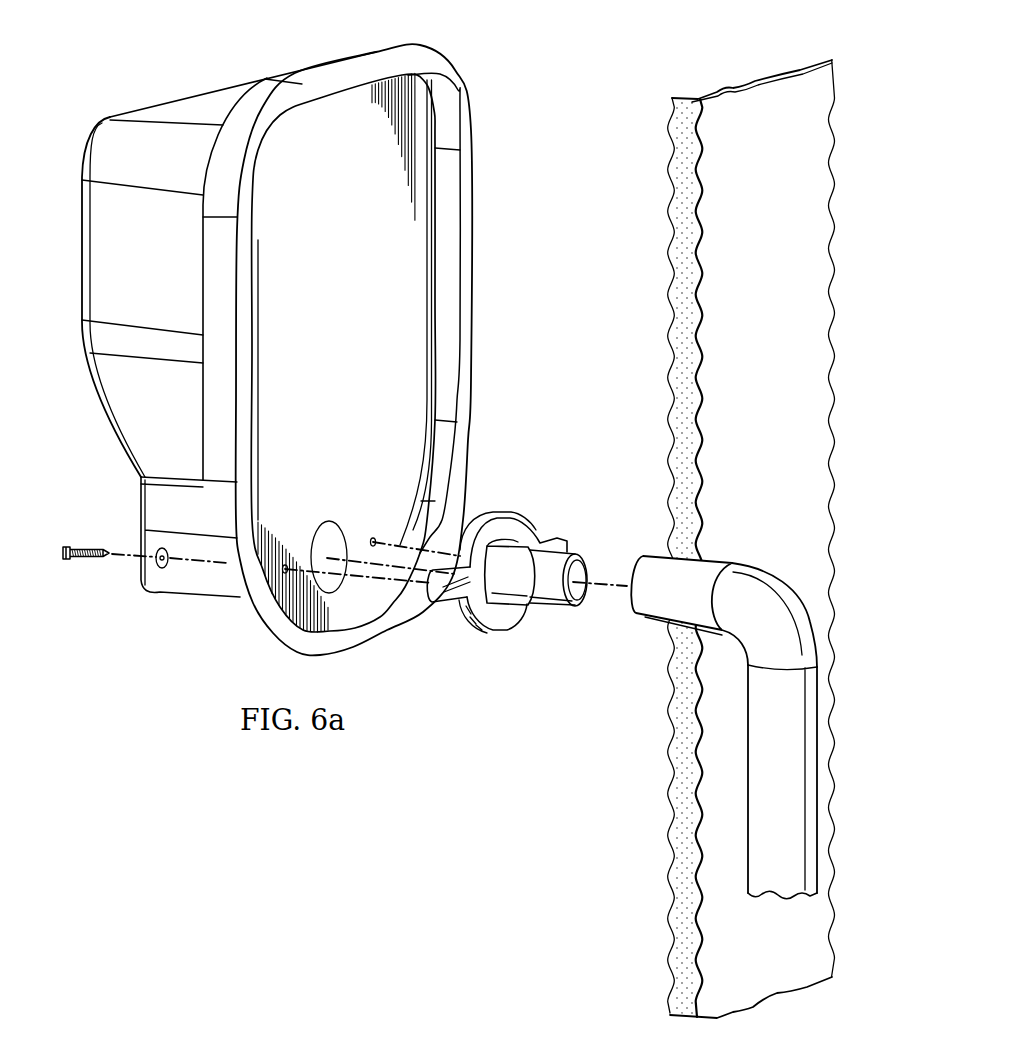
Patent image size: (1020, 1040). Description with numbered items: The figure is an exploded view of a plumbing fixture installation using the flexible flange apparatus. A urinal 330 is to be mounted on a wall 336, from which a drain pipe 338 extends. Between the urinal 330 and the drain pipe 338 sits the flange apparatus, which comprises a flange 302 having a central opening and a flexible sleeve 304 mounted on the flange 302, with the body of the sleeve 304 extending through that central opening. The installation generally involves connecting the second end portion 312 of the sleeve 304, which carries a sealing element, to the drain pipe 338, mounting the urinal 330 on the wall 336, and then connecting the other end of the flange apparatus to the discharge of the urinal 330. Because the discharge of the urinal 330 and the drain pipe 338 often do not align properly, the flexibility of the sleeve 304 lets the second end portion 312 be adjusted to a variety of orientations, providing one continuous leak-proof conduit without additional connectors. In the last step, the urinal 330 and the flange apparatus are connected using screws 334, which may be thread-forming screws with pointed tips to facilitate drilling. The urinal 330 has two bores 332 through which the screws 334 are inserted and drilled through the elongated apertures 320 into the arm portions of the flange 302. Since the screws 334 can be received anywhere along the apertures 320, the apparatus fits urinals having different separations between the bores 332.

The urinal 330 is at (318, 70).
The bores 332 is at (286, 564).
The screws 334 is at (83, 556).
The flange 302 is at (504, 580).
The flexible sleeve 304 is at (533, 623).
The second end portion 312 is at (555, 606).
The apertures 320 is at (458, 607).
The wall 336 is at (753, 80).
The drain pipe 338 is at (649, 560).